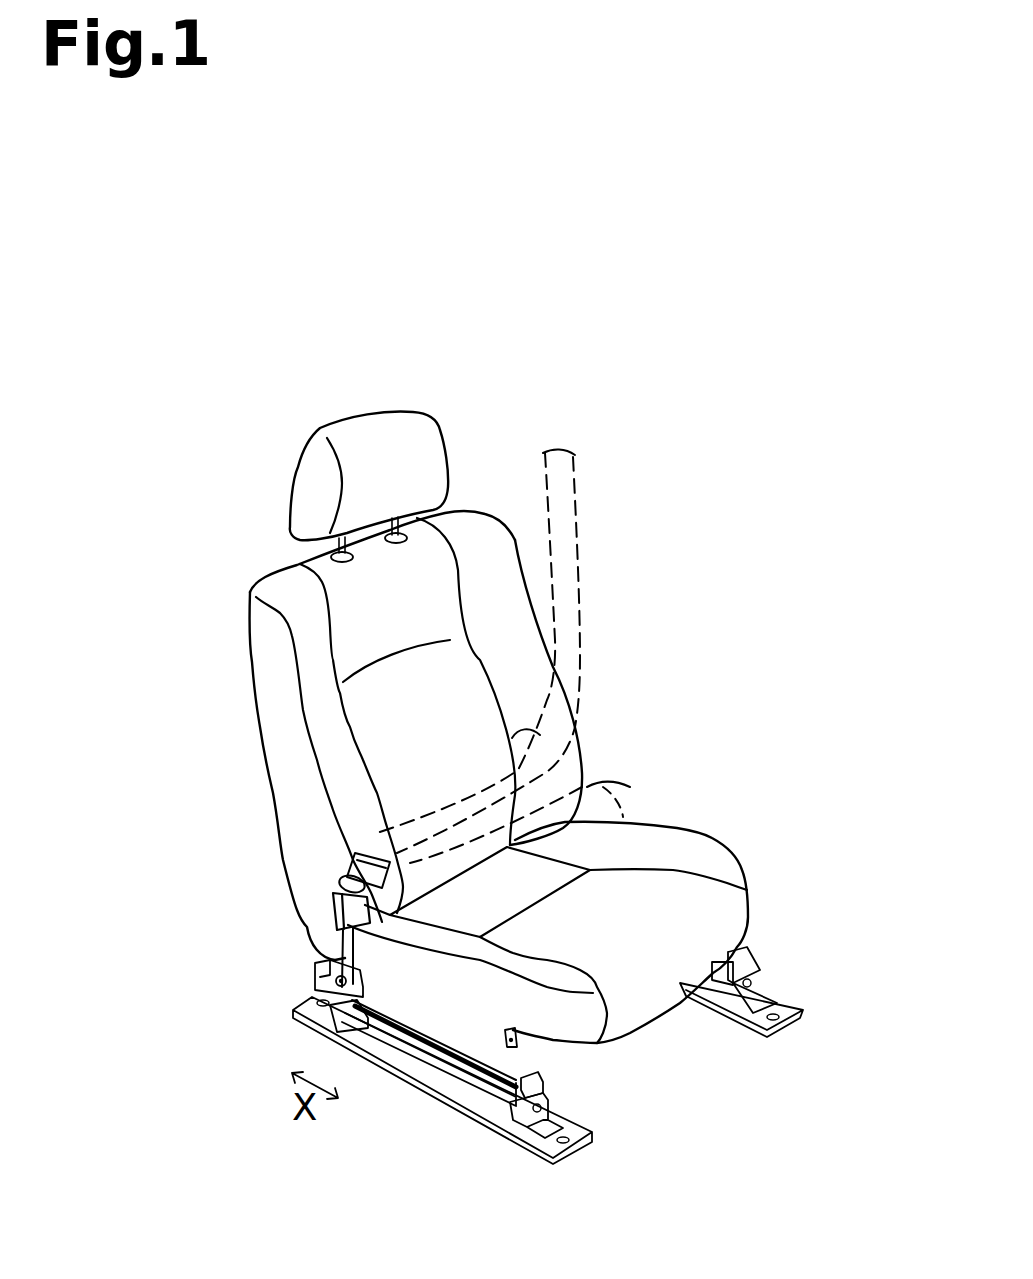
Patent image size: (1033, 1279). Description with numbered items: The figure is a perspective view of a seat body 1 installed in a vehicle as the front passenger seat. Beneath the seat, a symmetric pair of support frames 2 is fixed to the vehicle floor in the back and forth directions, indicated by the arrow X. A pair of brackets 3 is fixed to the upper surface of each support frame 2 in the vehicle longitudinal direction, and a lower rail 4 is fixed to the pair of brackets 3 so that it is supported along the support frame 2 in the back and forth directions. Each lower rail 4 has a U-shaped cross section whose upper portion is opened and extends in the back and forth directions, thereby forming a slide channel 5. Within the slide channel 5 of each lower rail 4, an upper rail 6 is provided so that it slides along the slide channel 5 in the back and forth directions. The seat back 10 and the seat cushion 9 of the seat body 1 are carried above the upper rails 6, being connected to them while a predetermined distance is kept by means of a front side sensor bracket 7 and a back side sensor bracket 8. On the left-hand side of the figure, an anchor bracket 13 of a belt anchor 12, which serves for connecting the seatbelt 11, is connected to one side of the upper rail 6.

The seat body 1 is at (682, 566).
The support frame 2 is at (513, 1130).
The bracket 3 is at (320, 1028).
The lower rail 4 is at (477, 1060).
The slide channel 5 is at (537, 1070).
The upper rail 6 is at (417, 1020).
The front side sensor bracket 7 is at (510, 1043).
The back side sensor bracket 8 is at (365, 975).
The seat cushion 9 is at (720, 857).
The seat back 10 is at (266, 658).
The seatbelt 11 is at (512, 738).
The belt anchor 12 is at (333, 897).
The anchor bracket 13 is at (307, 943).